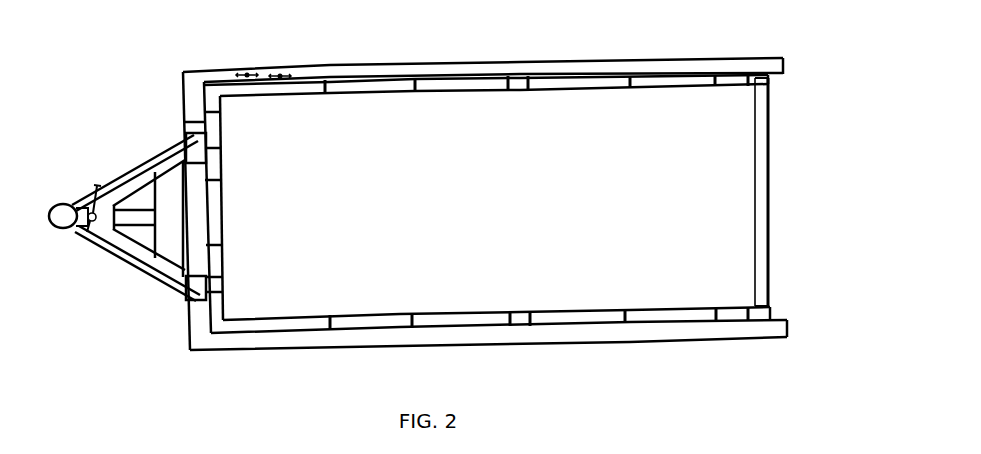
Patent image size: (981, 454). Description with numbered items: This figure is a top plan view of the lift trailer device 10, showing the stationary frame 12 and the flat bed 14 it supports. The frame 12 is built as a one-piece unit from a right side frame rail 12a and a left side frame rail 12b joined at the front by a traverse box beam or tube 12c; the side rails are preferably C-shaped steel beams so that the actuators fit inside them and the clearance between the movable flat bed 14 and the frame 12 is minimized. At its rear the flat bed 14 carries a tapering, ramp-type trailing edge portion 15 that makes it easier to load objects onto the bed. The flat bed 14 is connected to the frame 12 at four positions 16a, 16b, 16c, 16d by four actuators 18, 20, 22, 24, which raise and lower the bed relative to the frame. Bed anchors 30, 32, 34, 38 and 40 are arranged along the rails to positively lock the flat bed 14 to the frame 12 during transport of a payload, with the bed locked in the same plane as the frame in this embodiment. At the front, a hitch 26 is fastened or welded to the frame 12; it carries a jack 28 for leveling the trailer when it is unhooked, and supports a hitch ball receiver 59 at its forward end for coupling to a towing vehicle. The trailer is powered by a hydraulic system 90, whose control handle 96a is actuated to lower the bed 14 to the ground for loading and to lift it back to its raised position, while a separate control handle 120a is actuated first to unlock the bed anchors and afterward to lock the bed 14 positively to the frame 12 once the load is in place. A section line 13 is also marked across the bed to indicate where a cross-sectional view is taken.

The lift trailer device 10 is at (165, 46).
The frame 12 is at (433, 218).
The right side frame rail 12a is at (567, 66).
The left side frame rail 12b is at (245, 343).
The front traverse box beam 12c is at (187, 319).
The section line 13- 13 is at (515, 343).
The flat bed 14 is at (778, 212).
The trailing edge portion 15 is at (760, 114).
The connection position 16a is at (368, 60).
The connection position 16b is at (670, 58).
The connection position 16c is at (372, 338).
The connection position 16d is at (680, 329).
The actuator 18 is at (397, 78).
The actuator 20 is at (617, 63).
The actuator 22 is at (331, 334).
The actuator 24 is at (648, 318).
The hitch 26 is at (116, 172).
The jack 28 is at (87, 232).
The bed anchor 30 is at (184, 134).
The bed anchor 32 is at (515, 78).
The bed anchor 34 is at (747, 77).
The bed anchor 38 is at (523, 325).
The bed anchor 40 is at (752, 332).
The hitch ball receiver 59 is at (58, 207).
The hydraulic system 90 is at (157, 178).
The control handle 96a is at (278, 76).
The control handle 120a is at (245, 73).